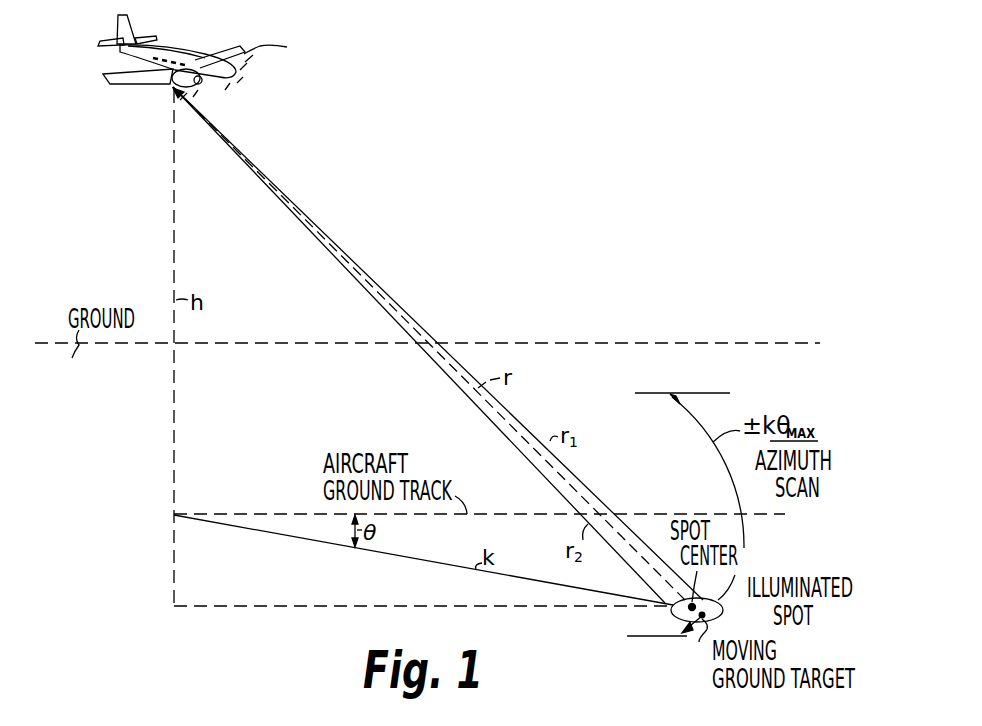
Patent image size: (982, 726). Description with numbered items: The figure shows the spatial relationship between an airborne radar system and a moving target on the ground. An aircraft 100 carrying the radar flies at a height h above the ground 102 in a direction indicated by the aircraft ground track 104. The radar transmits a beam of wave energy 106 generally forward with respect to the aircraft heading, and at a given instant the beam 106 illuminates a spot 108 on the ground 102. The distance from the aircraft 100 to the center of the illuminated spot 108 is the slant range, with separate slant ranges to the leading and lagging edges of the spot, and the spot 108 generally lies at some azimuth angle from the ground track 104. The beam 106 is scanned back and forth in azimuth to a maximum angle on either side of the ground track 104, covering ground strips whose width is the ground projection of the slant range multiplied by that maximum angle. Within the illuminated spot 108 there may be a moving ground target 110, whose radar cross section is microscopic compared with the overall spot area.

The aircraft 100 is at (227, 88).
The ground 102 is at (262, 343).
The aircraft ground track 104 is at (283, 514).
The beam of wave energy 106 is at (352, 258).
The illuminated spot 108 is at (724, 612).
The moving ground target 110 is at (689, 637).